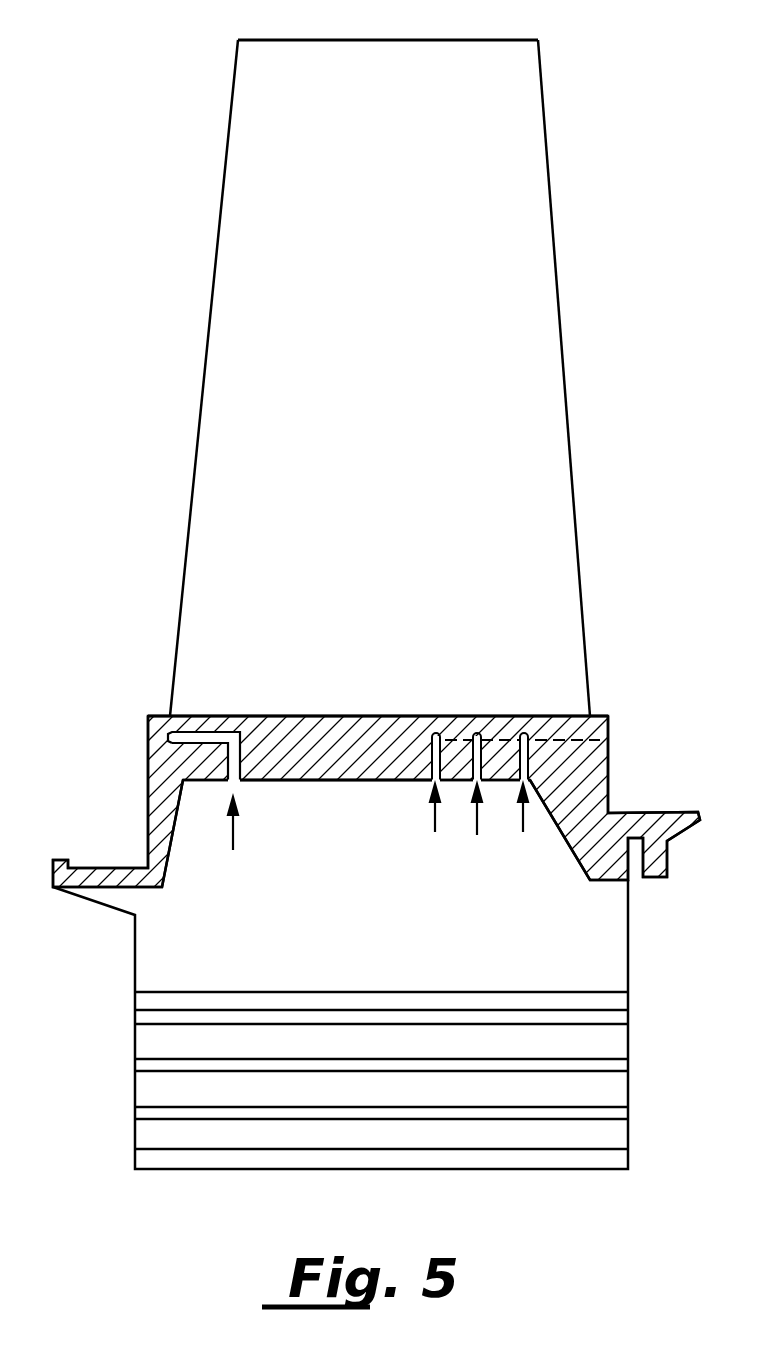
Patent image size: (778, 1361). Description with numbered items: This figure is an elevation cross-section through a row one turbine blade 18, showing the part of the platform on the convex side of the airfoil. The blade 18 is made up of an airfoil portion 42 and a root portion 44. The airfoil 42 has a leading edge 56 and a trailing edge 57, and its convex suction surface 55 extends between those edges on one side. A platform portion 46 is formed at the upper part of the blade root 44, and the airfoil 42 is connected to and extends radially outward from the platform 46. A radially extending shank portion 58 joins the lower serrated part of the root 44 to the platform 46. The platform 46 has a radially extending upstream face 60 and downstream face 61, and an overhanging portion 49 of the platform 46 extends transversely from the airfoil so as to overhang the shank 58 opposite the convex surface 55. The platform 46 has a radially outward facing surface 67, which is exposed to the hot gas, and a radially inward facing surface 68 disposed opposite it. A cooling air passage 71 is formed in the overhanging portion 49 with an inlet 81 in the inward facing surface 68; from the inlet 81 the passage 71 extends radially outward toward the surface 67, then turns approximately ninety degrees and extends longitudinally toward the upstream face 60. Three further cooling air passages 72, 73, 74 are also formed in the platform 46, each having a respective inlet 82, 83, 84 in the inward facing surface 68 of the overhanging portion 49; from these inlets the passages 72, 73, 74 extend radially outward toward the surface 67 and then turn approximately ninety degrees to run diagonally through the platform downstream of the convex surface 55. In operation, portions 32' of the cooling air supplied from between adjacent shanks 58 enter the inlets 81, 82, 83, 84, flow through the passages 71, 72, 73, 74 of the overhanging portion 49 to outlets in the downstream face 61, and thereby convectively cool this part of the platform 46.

The turbine blade 18 is at (585, 92).
The airfoil portion 42 is at (580, 462).
The convex suction surface 55 is at (405, 357).
The leading edge 56 is at (222, 232).
The trailing edge 57 is at (560, 270).
The platform portion 46 is at (253, 716).
The radially outward facing platform surface 67 is at (560, 716).
The upstream face 60 is at (148, 785).
The downstream face 61 is at (610, 770).
The overhanging portion 49 is at (312, 755).
The radially inward facing surface 68 is at (347, 781).
The cooling air passage 71 is at (210, 716).
The cooling air passage 72 is at (432, 745).
The cooling air passage 73 is at (473, 745).
The cooling air passage 74 is at (520, 745).
The inlet 81 is at (238, 781).
The inlet 82 is at (435, 783).
The inlet 83 is at (473, 783).
The inlet 84 is at (522, 783).
The cooling air portions 32' is at (365, 859).
The shank portion 58 is at (630, 952).
The root portion 44 is at (630, 1042).